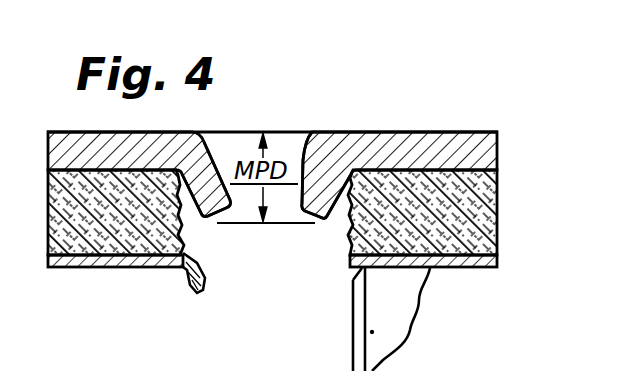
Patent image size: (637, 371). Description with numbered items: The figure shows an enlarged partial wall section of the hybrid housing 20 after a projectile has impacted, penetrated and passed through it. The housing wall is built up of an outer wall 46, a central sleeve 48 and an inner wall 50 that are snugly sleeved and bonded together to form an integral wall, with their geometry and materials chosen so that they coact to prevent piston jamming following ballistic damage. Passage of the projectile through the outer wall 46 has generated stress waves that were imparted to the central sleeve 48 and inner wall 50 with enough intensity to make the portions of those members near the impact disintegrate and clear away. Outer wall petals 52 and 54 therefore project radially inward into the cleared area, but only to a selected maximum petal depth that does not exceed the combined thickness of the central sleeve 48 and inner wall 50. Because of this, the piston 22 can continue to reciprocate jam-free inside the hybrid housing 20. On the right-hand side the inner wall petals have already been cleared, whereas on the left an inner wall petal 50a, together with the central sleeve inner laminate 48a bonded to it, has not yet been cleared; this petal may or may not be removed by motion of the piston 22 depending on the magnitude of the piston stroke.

The hybrid housing 20 is at (423, 97).
The piston 22 is at (371, 333).
The outer wall 46 is at (78, 143).
The central sleeve 48 is at (78, 258).
The central sleeve inner laminate 48a is at (201, 268).
The inner wall 50 is at (127, 258).
The inner wall petal 50a is at (186, 272).
The outer wall petal 52 is at (218, 150).
The outer wall petal 54 is at (318, 146).